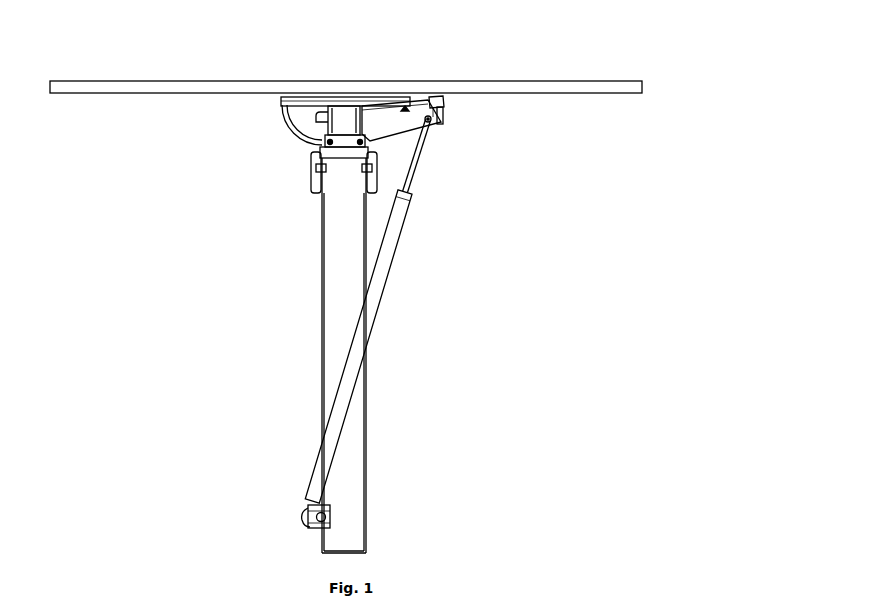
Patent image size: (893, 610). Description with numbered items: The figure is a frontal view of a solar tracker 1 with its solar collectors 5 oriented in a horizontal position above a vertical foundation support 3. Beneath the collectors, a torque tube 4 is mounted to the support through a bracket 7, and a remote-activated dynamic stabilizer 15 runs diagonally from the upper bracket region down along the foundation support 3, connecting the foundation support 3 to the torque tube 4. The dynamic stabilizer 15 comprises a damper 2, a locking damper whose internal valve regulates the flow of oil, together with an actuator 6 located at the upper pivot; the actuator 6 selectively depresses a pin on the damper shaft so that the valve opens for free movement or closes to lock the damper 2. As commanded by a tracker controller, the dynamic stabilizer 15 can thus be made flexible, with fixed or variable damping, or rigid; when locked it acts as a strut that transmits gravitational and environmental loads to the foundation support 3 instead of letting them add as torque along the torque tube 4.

The solar tracker 1 is at (152, 415).
The damper 2 is at (380, 300).
The foundation support 3 is at (322, 278).
The torque tube 4 is at (330, 120).
The solar collectors 5 is at (248, 81).
The actuator 6 is at (445, 121).
The bracket 7 is at (385, 118).
The dynamic stabilizer 15 is at (500, 227).